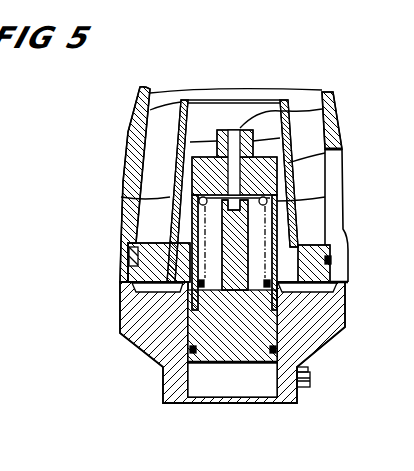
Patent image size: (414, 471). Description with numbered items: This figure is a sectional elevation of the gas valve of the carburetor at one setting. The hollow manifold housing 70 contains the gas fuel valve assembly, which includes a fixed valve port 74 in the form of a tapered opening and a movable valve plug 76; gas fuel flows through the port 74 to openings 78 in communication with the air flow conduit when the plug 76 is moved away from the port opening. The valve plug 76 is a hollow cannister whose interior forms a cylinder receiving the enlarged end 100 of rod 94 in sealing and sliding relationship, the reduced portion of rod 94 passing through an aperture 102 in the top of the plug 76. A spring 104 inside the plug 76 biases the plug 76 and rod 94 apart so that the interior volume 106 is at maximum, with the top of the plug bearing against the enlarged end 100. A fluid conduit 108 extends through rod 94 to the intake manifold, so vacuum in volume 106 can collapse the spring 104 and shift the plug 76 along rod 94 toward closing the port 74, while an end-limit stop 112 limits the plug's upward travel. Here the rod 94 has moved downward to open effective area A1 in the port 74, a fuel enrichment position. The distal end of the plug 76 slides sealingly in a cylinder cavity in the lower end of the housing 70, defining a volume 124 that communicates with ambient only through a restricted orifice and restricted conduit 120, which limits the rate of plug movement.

The manifold housing 70 is at (334, 333).
The fixed valve port 74 is at (147, 100).
The movable valve plug 76 is at (298, 225).
The openings 78 is at (335, 290).
The rod 94 is at (288, 138).
The enlarged end 100 is at (298, 206).
The aperture 102 is at (180, 140).
The spring 104 is at (193, 183).
The interior volume 106 is at (212, 240).
The fluid conduit 108 is at (322, 109).
The end-limit stop 112 is at (226, 212).
The restricted conduit 120 is at (311, 382).
The volume 124 is at (203, 377).
The effective area A1 is at (342, 150).